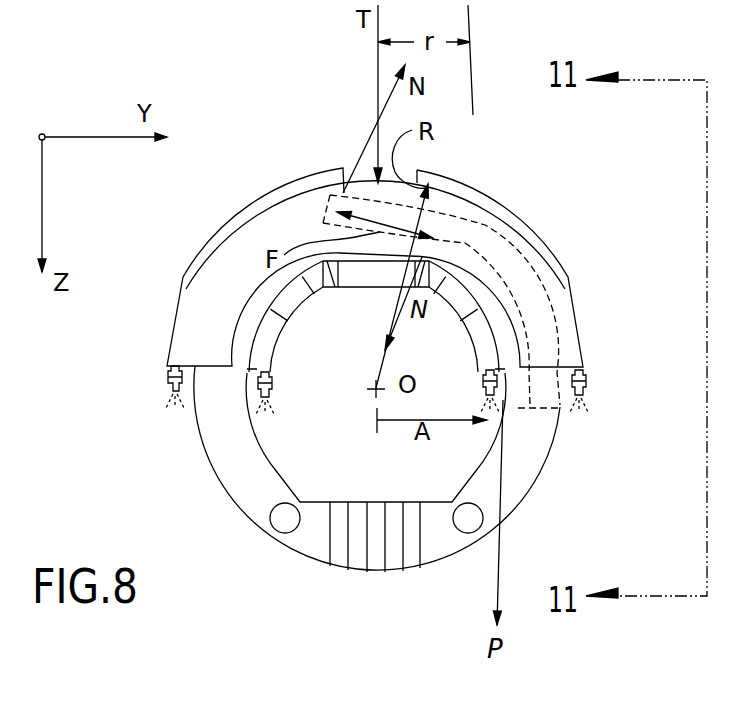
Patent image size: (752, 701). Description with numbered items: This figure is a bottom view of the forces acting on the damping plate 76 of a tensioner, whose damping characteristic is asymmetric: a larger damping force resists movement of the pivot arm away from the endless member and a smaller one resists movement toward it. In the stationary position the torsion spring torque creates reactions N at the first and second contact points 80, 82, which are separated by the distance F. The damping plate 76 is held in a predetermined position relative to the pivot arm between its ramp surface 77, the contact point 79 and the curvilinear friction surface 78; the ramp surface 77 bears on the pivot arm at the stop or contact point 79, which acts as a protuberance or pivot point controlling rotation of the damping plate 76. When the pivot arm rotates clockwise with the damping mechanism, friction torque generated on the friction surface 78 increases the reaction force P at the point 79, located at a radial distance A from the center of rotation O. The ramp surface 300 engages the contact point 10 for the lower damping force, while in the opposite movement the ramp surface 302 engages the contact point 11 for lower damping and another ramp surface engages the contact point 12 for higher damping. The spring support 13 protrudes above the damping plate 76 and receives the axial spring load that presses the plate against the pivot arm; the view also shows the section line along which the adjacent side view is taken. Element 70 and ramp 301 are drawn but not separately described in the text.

The contact point 10 is at (581, 402).
The contact point 11 is at (164, 403).
The contact point 12 is at (276, 406).
The spring support 13 is at (375, 547).
The friction pad 70 is at (528, 318).
The damping plate 76 is at (242, 483).
The ramp surface 77 is at (483, 385).
The friction surface 78 is at (530, 221).
The contact point 79 is at (492, 420).
The first contact point 80 is at (341, 189).
The second contact point 82 is at (400, 259).
The ramp surface 300 is at (586, 381).
The nozzle 301 is at (273, 376).
The ramp surface 302 is at (168, 375).